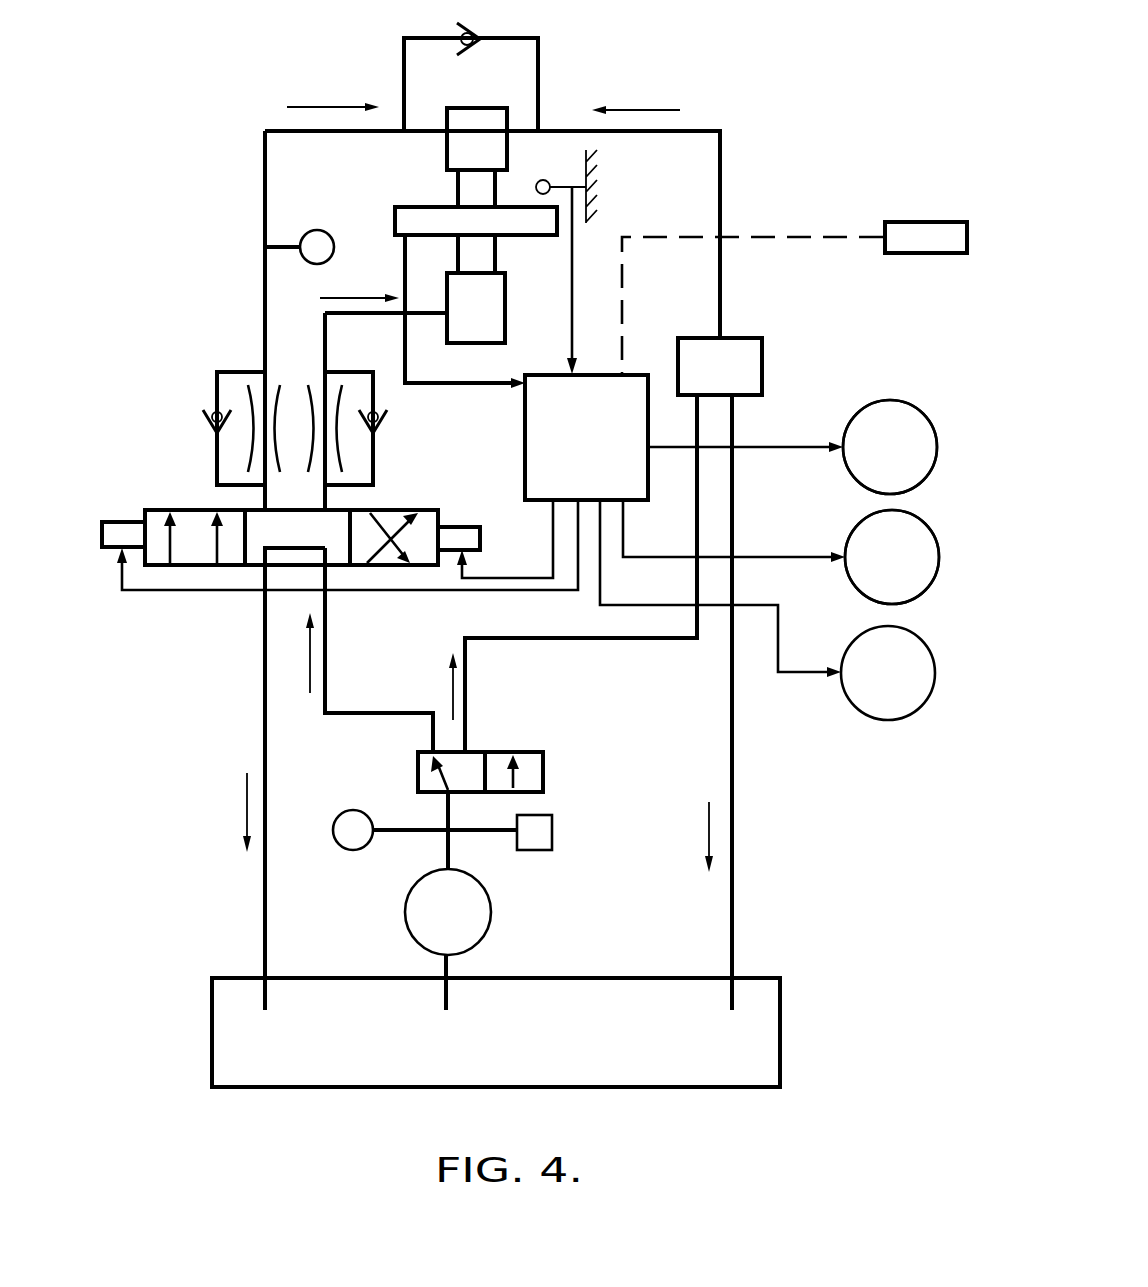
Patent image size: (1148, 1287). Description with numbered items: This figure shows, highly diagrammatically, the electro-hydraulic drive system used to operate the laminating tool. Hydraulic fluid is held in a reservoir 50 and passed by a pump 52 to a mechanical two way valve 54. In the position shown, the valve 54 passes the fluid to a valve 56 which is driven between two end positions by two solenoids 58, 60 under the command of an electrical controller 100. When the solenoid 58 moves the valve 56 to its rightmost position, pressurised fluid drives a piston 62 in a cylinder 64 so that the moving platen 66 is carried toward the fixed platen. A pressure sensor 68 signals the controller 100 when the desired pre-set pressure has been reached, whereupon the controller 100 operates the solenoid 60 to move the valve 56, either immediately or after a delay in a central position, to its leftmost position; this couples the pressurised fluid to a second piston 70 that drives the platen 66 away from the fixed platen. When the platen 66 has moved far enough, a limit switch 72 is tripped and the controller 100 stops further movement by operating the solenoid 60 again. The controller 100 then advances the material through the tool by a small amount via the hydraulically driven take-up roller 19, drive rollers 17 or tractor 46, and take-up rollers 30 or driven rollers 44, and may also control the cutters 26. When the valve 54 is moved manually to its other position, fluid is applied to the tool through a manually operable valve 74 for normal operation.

The cylinder 64 is at (478, 135).
The piston 62 is at (455, 187).
The moving platen 66 is at (447, 221).
The second piston 70 is at (475, 305).
The pressure sensor 68 is at (315, 230).
The limit switch 72 is at (571, 186).
The cutters 26 is at (925, 222).
The manually operable valve 74 is at (732, 373).
The controller 100 is at (612, 450).
The drive rollers 17 is at (890, 447).
The hydraulically driven tractor 46 is at (890, 447).
The take-up rollers 30 is at (892, 557).
The hydraulically driven rollers 44 is at (892, 557).
The take-up roller 19 is at (888, 673).
The valve 56 is at (404, 496).
The solenoid 58 is at (130, 520).
The solenoid 60 is at (474, 540).
The mechanical two way valve 54 is at (546, 765).
The pump 52 is at (468, 930).
The reservoir 50 is at (567, 1045).